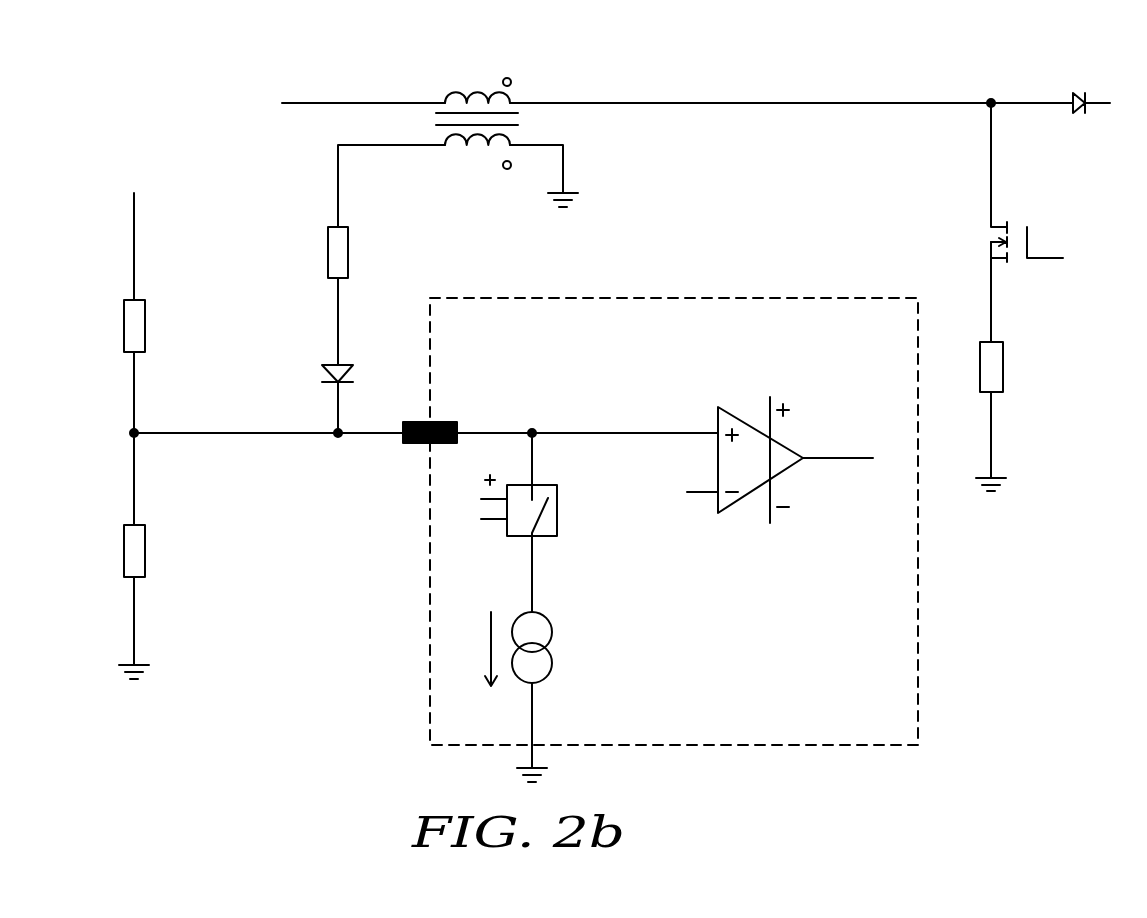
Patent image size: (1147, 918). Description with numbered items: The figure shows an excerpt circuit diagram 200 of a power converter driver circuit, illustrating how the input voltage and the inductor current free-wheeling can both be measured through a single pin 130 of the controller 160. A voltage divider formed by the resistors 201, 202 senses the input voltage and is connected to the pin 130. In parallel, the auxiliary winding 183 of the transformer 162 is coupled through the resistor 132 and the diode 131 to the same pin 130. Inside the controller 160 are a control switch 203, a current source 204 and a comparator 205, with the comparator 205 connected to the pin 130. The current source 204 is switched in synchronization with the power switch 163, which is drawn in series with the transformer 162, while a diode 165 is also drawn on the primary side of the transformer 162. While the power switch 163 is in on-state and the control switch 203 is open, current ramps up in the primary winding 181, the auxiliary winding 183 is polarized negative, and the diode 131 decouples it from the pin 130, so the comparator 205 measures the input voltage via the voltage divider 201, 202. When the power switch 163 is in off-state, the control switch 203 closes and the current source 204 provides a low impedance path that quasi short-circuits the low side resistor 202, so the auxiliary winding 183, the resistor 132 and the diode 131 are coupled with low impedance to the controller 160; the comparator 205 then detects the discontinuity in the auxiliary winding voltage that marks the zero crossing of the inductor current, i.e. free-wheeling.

The circuit diagram 200 is at (156, 121).
The transformer 162 is at (457, 82).
The primary winding 181 is at (498, 82).
The auxiliary winding 183 is at (453, 152).
The diode D1 165 is at (1090, 110).
The power switch 163 is at (988, 240).
The controller 160 is at (743, 298).
The resistor R4 132 is at (324, 253).
The diode D2 131 is at (323, 375).
The pin 130 is at (400, 437).
The resistor 201 is at (150, 335).
The low side resistor R2 202 is at (150, 562).
The control switch S1 203 is at (557, 507).
The current source 204 is at (552, 647).
The comparator 205 is at (733, 513).